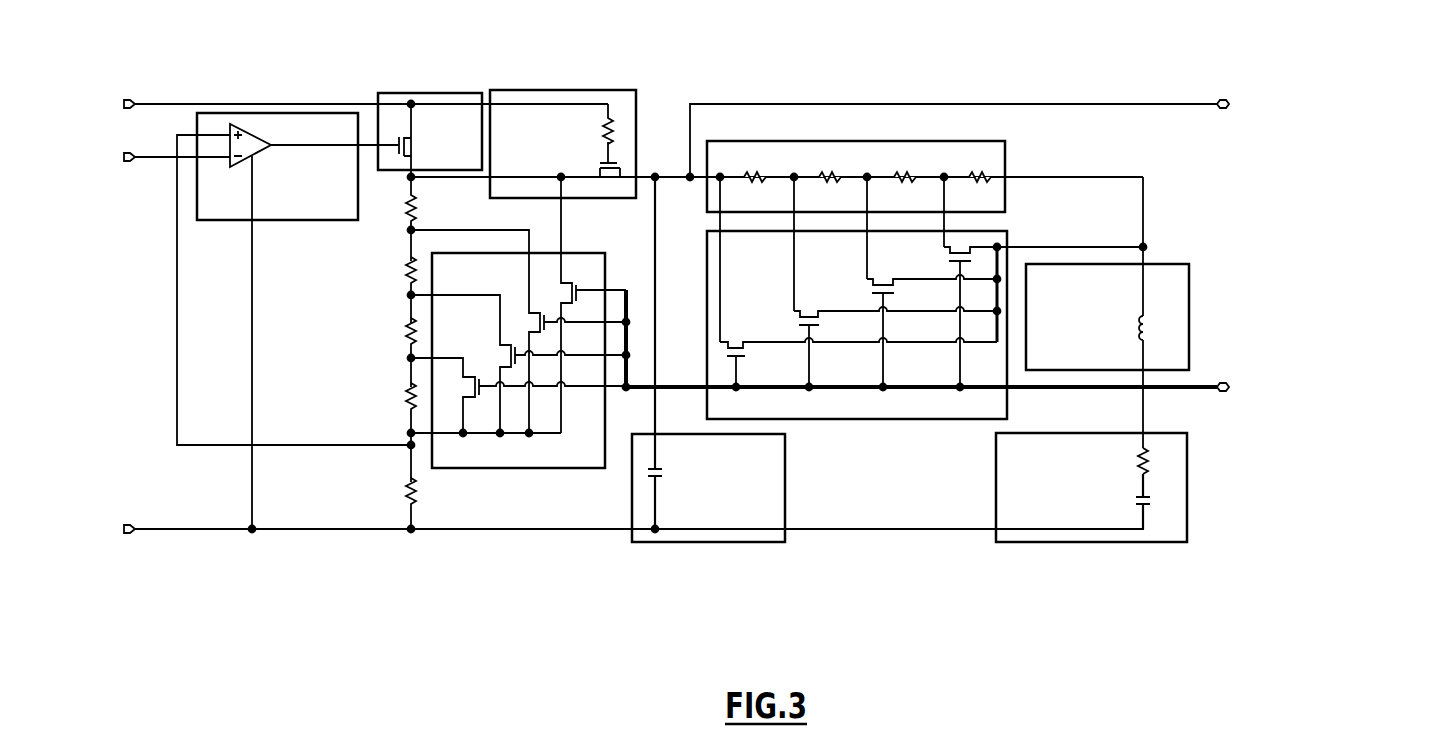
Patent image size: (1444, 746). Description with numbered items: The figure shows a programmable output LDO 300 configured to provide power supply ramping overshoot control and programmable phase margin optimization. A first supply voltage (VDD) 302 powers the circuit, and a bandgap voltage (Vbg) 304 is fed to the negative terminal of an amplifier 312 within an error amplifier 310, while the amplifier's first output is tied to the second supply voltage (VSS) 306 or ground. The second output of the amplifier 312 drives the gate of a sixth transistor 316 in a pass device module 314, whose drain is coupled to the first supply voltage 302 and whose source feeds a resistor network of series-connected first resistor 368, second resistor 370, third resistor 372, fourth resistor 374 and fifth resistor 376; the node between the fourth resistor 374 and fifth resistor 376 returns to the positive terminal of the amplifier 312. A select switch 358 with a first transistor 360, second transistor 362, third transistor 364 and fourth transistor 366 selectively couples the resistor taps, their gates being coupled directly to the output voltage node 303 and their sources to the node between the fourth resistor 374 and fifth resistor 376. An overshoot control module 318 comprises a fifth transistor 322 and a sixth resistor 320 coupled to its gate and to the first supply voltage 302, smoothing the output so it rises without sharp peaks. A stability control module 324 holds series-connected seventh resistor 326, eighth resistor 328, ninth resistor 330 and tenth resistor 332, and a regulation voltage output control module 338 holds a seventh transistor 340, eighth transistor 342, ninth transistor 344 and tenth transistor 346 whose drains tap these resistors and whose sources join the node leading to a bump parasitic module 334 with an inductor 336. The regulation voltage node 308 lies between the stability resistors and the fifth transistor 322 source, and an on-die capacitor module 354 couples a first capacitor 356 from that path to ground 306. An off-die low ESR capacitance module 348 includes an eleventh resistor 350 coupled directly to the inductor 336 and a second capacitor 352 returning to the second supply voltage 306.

The programmable output LDO 300 is at (1270, 618).
The first supply voltage (VDD) 302 is at (130, 99).
The output voltage (Vctrl_Vreg_Output) node 303 is at (1220, 381).
The bandgap voltage (Vbg) 304 is at (130, 162).
The second supply voltage (VSS) 306 is at (131, 534).
The regulation voltage (Vreg) node 308 is at (1222, 99).
The error amplifier 310 is at (237, 222).
The amplifier 312 is at (255, 128).
The pass device module 314 is at (426, 93).
The sixth transistor 316 is at (400, 138).
The overshoot control module 318 is at (540, 90).
The sixth resistor 320 is at (610, 118).
The fifth transistor 322 is at (620, 164).
The stability control module 324 is at (1005, 193).
The seventh resistor 326 is at (756, 172).
The eighth resistor 328 is at (832, 172).
The ninth resistor 330 is at (907, 172).
The tenth resistor 332 is at (993, 170).
The bump parasitic module 334 is at (1189, 270).
The inductor 336 is at (1150, 332).
The regulation voltage output control module 338 is at (947, 419).
The seventh transistor 340 is at (740, 344).
The eighth transistor 342 is at (812, 313).
The ninth transistor 344 is at (887, 283).
The tenth transistor 346 is at (962, 244).
The off-die low ESR capacitance module 348 is at (1188, 505).
The eleventh resistor 350 is at (1150, 460).
The second capacitor 352 is at (1148, 508).
The on-die capacitor module 354 is at (785, 470).
The first capacitor 356 is at (645, 475).
The select switch 358 is at (533, 468).
The first transistor 360 is at (580, 286).
The second transistor 362 is at (538, 322).
The third transistor 364 is at (505, 354).
The fourth transistor 366 is at (466, 398).
The first resistor 368 is at (416, 206).
The second resistor 370 is at (406, 268).
The third resistor 372 is at (406, 331).
The fourth resistor 374 is at (406, 395).
The fifth resistor 376 is at (406, 490).